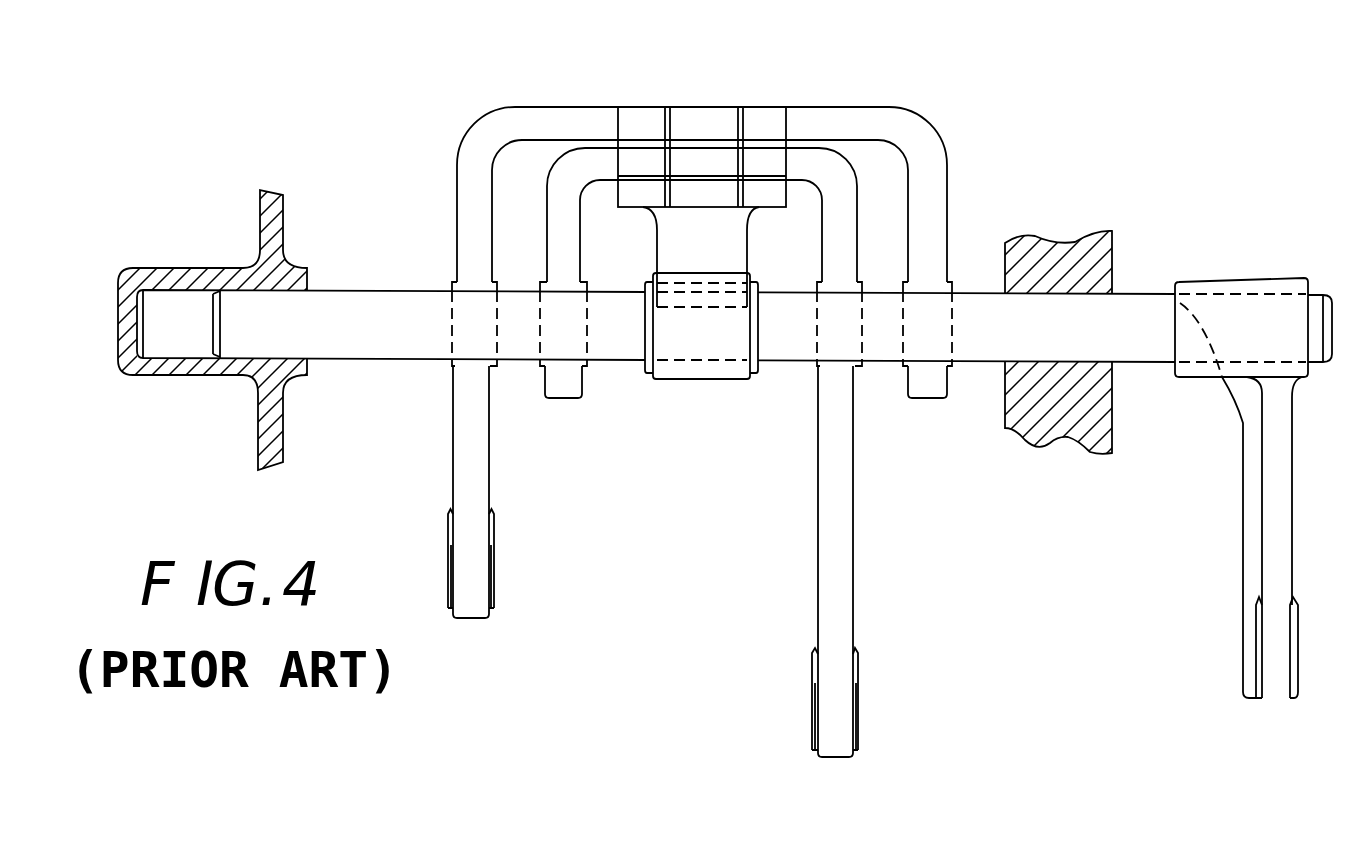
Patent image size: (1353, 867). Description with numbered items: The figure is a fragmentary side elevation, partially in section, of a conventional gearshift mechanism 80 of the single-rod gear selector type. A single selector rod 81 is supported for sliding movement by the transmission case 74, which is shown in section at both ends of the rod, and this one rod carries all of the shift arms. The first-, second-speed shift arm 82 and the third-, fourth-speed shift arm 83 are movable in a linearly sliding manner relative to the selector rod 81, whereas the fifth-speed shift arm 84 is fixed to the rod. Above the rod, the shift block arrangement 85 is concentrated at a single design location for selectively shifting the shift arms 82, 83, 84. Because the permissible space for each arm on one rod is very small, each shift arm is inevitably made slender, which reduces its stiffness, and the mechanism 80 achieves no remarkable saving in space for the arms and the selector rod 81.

The transmission case 74 is at (268, 213).
The gearshift mechanism 80 is at (980, 142).
The selector rod 81 is at (975, 355).
The first-, second-speed shift arm 82 is at (837, 576).
The third-, fourth-speed shift arm 83 is at (470, 486).
The fifth-speed shift arm 84 is at (1277, 556).
The shift block arrangement 85 is at (740, 92).